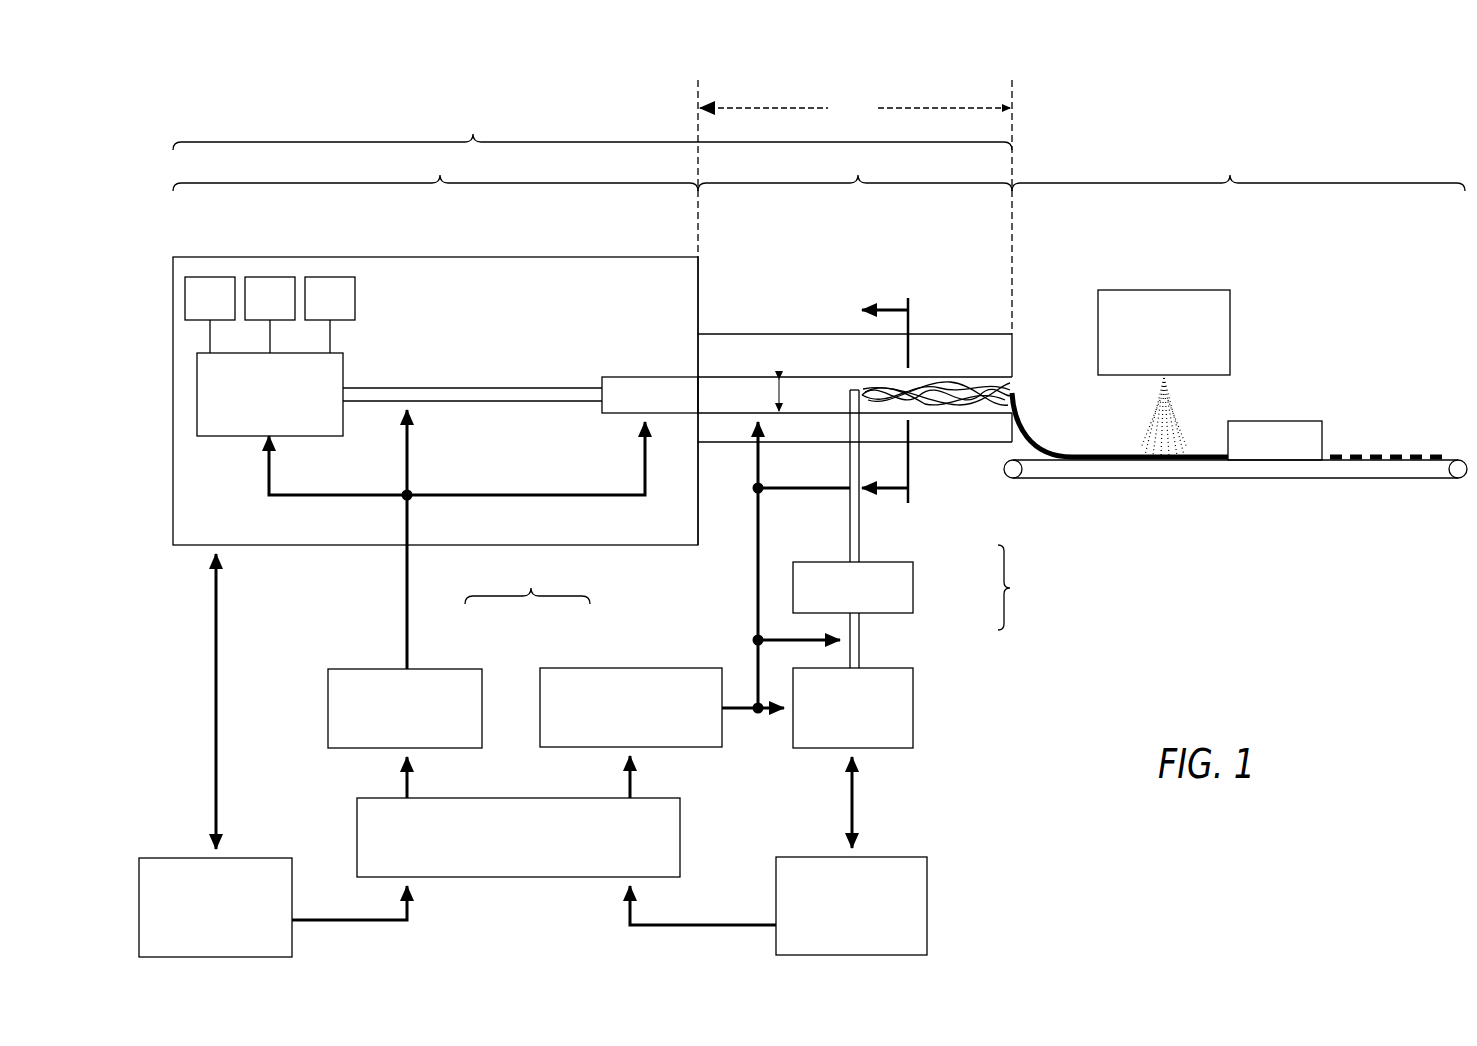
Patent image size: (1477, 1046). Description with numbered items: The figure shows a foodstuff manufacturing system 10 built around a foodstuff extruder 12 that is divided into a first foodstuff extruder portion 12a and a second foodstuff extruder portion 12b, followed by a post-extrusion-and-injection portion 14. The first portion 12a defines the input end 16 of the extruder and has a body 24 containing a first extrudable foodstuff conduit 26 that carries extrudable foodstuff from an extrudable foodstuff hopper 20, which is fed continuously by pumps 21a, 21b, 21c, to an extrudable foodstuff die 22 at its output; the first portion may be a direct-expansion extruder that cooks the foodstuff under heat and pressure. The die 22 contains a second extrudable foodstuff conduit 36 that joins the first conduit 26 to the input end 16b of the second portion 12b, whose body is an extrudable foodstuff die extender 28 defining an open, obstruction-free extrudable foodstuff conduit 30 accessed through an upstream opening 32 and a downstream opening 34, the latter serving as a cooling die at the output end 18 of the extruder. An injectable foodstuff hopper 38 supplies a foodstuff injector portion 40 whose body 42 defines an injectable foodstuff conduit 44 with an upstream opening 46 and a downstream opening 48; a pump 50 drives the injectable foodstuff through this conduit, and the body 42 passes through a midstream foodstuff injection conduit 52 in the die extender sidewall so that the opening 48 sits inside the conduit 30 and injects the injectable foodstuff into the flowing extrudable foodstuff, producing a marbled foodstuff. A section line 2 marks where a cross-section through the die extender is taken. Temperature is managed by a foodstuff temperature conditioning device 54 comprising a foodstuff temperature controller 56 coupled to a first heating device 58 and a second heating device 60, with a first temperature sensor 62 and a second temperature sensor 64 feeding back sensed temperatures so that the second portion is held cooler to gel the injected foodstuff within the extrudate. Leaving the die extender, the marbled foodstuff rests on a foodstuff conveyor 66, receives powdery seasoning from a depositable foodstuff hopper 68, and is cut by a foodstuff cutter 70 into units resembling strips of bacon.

The foodstuff manufacturing system 10 is at (138, 128).
The foodstuff extruder 12 is at (592, 130).
The first foodstuff extruder portion 12a is at (435, 171).
The second foodstuff extruder portion 12b is at (855, 171).
The post-extrusion-and-injection portion 14 is at (1238, 171).
The input end 16 is at (165, 297).
The input end 16b is at (692, 352).
The output end 18 is at (705, 266).
The extrudable foodstuff hopper 20 is at (228, 442).
The pump 21a is at (210, 315).
The pump 21b is at (270, 315).
The pump 21c is at (330, 315).
The extrudable foodstuff die 22 is at (626, 380).
The body 24 is at (476, 253).
The first extrudable foodstuff conduit 26 is at (414, 382).
The extrudable foodstuff die extender 28 is at (804, 330).
The extrudable foodstuff conduit 30 is at (822, 384).
The upstream opening 32 is at (708, 416).
The downstream opening 34 is at (1000, 392).
The second extrudable foodstuff conduit 36 is at (668, 392).
The injectable foodstuff hopper 38 is at (920, 686).
The foodstuff injector portion 40 is at (1019, 587).
The body 42 is at (866, 511).
The injectable foodstuff conduit 44 is at (864, 541).
The upstream opening 46 is at (862, 666).
The downstream opening 48 is at (845, 410).
The pump 50 is at (920, 601).
The midstream foodstuff injection conduit 52 is at (864, 422).
The foodstuff temperature conditioning device 54 is at (527, 585).
The foodstuff temperature controller 56 is at (503, 795).
The first heating device 58 is at (465, 664).
The second heating device 60 is at (592, 664).
The first temperature sensor 62 is at (250, 853).
The second temperature sensor 64 is at (888, 852).
The foodstuff conveyor 66 is at (1320, 486).
The depositable foodstuff hopper 68 is at (1211, 287).
The foodstuff cutter 70 is at (1301, 418).
The section line 2 is at (899, 404).